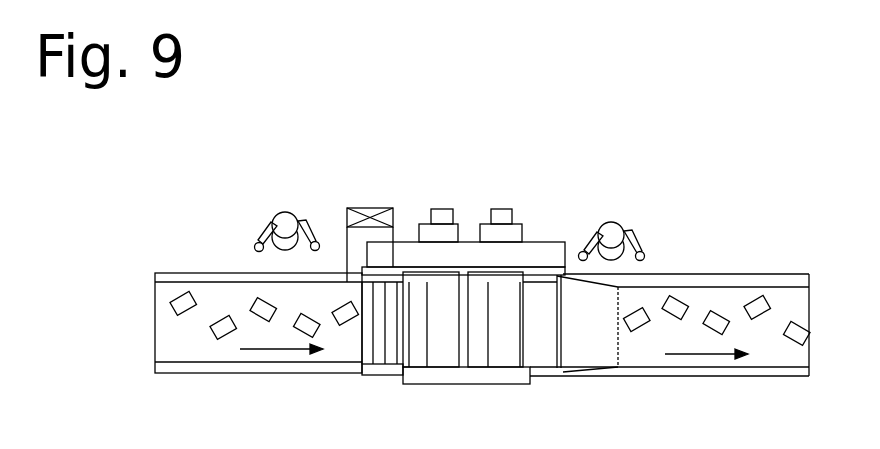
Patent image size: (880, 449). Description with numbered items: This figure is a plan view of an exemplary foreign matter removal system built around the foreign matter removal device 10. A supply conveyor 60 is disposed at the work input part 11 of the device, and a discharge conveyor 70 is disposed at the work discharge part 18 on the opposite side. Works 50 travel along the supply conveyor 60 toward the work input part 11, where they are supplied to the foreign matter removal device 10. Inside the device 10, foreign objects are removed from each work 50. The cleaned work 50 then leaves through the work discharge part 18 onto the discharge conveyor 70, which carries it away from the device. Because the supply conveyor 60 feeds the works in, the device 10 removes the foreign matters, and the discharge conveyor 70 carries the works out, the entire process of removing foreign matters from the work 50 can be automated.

The foreign matter removal device 10 is at (466, 323).
The work input part 11 is at (362, 350).
The work discharge part 18 is at (570, 349).
The work 50 is at (182, 309).
The supply conveyor 60 is at (263, 373).
The discharge conveyor 70 is at (695, 377).